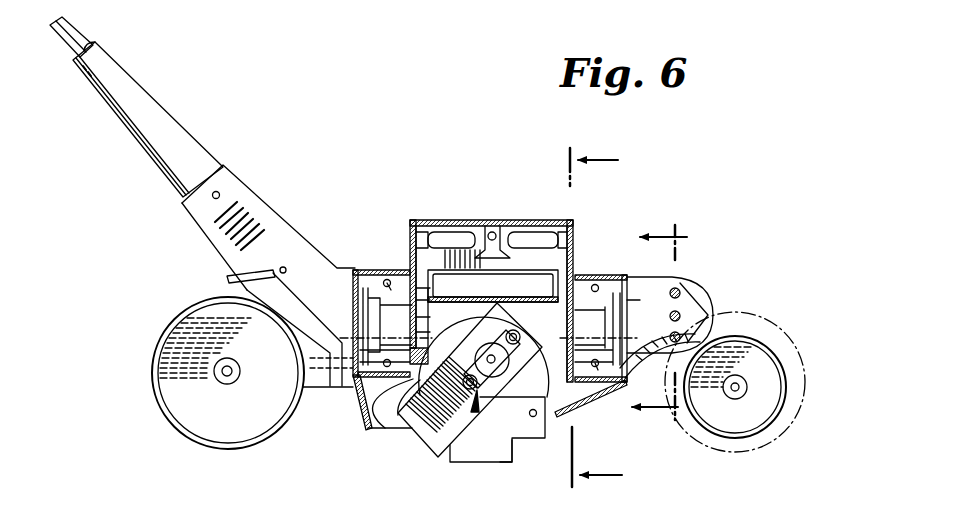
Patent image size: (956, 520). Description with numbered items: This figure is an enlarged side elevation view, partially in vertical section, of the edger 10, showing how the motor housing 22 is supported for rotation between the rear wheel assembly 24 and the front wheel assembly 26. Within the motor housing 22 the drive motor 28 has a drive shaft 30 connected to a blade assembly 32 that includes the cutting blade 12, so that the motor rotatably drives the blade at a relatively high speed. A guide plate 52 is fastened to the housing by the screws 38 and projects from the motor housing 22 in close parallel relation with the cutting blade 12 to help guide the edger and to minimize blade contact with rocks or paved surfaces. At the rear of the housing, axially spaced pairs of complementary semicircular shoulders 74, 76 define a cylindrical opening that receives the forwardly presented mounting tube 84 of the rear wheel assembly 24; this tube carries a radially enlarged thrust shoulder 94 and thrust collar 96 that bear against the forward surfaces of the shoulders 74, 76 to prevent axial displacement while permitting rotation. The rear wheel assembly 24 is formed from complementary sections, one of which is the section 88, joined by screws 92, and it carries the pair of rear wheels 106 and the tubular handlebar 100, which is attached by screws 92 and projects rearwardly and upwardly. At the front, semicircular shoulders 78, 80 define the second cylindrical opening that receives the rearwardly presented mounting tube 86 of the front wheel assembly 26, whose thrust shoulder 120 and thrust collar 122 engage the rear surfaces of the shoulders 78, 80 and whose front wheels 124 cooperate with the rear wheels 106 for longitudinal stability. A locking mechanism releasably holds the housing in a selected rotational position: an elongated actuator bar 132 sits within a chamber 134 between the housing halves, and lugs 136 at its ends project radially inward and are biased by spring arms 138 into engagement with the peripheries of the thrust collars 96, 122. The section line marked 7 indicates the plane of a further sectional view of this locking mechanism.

The cutting blade 12 is at (430, 427).
The motor housing 22 is at (413, 200).
The rear wheel assembly 24 is at (236, 84).
The front wheel assembly 26 is at (724, 247).
The drive motor 28 is at (525, 388).
The drive shaft 30 is at (487, 345).
The blade assembly 32 is at (480, 420).
The screws 38 is at (533, 417).
The guide plate 52 is at (512, 453).
The semicircular shoulders 74 is at (357, 270).
The semicircular shoulders 76 is at (402, 270).
The semicircular shoulders 78 is at (638, 276).
The semicircular shoulders 80 is at (585, 275).
The mounting tube 84 is at (360, 407).
The mounting tube 86 is at (660, 366).
The section 88 is at (205, 230).
The screws 92 is at (218, 193).
The thrust shoulder 94 is at (366, 306).
The thrust collar 96 is at (412, 435).
The tubular handlebar 100 is at (122, 108).
The rear wheels 106 is at (174, 409).
The thrust shoulder 120 is at (590, 327).
The thrust collar 122 is at (568, 403).
The front wheels 124 is at (760, 414).
The actuator bar 132 is at (482, 280).
The chamber 134 is at (507, 218).
The lugs 136 is at (413, 240).
The spring arms 138 is at (450, 243).
The section line 7 is at (604, 319).
The edger 10 is at (655, 323).